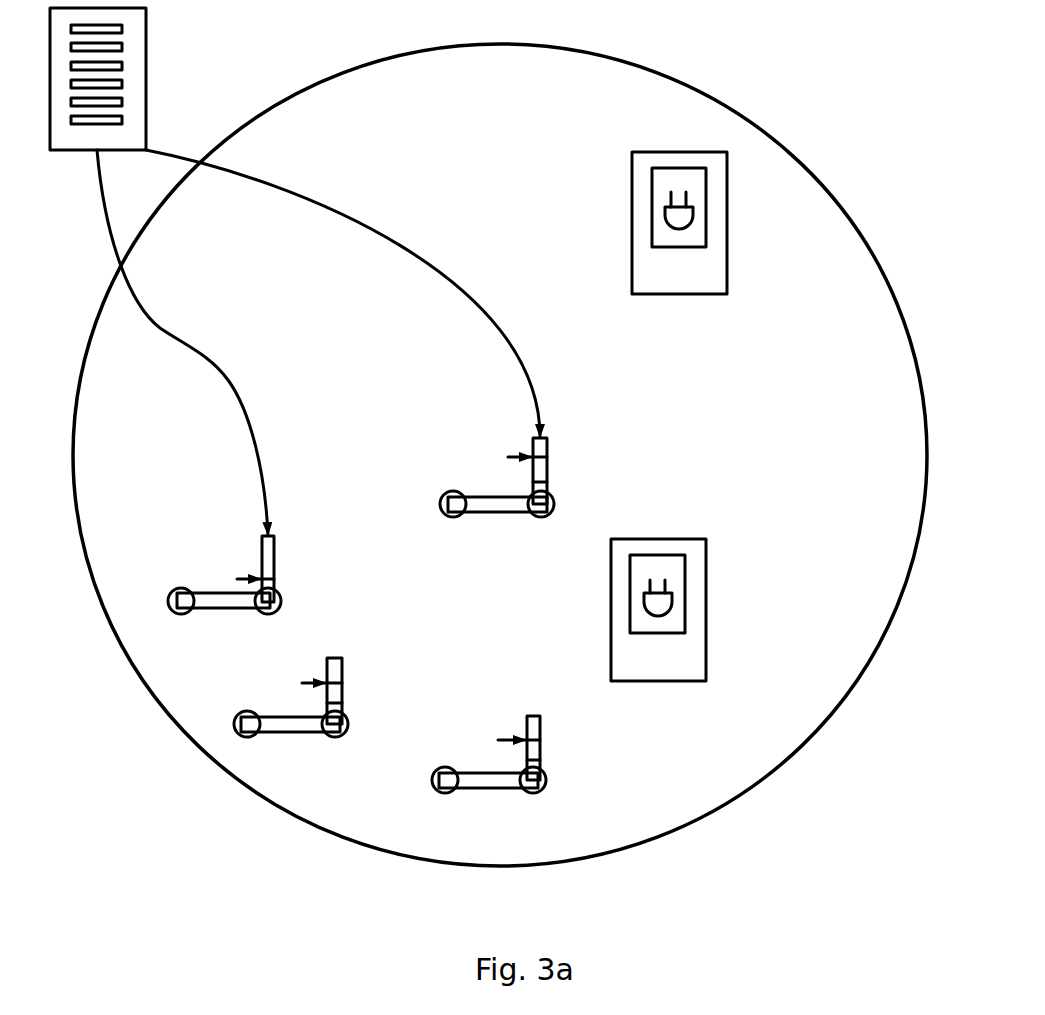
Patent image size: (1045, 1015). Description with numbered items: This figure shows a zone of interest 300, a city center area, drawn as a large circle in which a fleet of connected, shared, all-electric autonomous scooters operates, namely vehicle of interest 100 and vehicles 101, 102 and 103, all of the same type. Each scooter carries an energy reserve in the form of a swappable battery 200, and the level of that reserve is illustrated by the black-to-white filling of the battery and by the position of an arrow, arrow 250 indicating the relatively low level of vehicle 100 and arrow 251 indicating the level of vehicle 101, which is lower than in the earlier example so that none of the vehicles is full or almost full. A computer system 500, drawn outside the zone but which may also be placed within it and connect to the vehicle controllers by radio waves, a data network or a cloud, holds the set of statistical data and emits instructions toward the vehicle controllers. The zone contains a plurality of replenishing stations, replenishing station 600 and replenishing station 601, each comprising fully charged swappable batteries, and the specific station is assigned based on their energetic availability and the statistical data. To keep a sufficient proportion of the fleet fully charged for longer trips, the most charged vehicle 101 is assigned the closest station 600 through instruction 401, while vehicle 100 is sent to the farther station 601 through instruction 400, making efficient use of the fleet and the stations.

The vehicle of interest 100 is at (300, 554).
The vehicle 101 is at (556, 443).
The vehicle 102 is at (561, 742).
The vehicle 103 is at (349, 688).
The swappable battery 200 is at (278, 560).
The arrow 250 is at (238, 571).
The arrow 251 is at (510, 447).
The zone of interest 300 is at (382, 64).
The instruction 400 is at (244, 403).
The instruction 401 is at (397, 240).
The computer system 500 is at (148, 75).
The replenishing station 600 is at (610, 608).
The replenishing station 601 is at (631, 222).